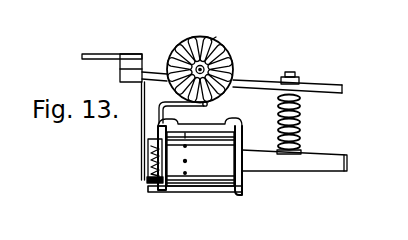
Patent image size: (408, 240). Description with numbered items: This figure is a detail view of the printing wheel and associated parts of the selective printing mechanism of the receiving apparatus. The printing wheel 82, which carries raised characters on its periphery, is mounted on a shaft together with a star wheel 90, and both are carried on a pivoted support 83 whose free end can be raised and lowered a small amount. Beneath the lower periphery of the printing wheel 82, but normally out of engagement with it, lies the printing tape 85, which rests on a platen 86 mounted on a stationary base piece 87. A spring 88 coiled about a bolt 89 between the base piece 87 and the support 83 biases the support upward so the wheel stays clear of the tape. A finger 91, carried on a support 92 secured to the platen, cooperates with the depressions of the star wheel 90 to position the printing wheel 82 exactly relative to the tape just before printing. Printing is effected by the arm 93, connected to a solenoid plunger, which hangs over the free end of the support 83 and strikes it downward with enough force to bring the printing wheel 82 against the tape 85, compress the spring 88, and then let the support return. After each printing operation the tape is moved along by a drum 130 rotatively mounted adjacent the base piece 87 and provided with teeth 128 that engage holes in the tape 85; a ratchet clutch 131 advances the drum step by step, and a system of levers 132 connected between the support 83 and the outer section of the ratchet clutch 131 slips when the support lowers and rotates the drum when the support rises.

The printing wheel 82 is at (213, 40).
The support 83 is at (331, 85).
The printing tape 85 is at (220, 122).
The platen 86 is at (238, 124).
The base piece 87 is at (299, 172).
The spring 88 is at (299, 115).
The bolt 89 is at (298, 130).
The star wheel 90 is at (229, 53).
The finger 91 is at (207, 106).
The support 92 is at (159, 122).
The arm 93 is at (104, 54).
The teeth 128 is at (187, 191).
The drum 130 is at (219, 191).
The ratchet clutch 131 is at (151, 184).
The system of levers 132 is at (148, 144).